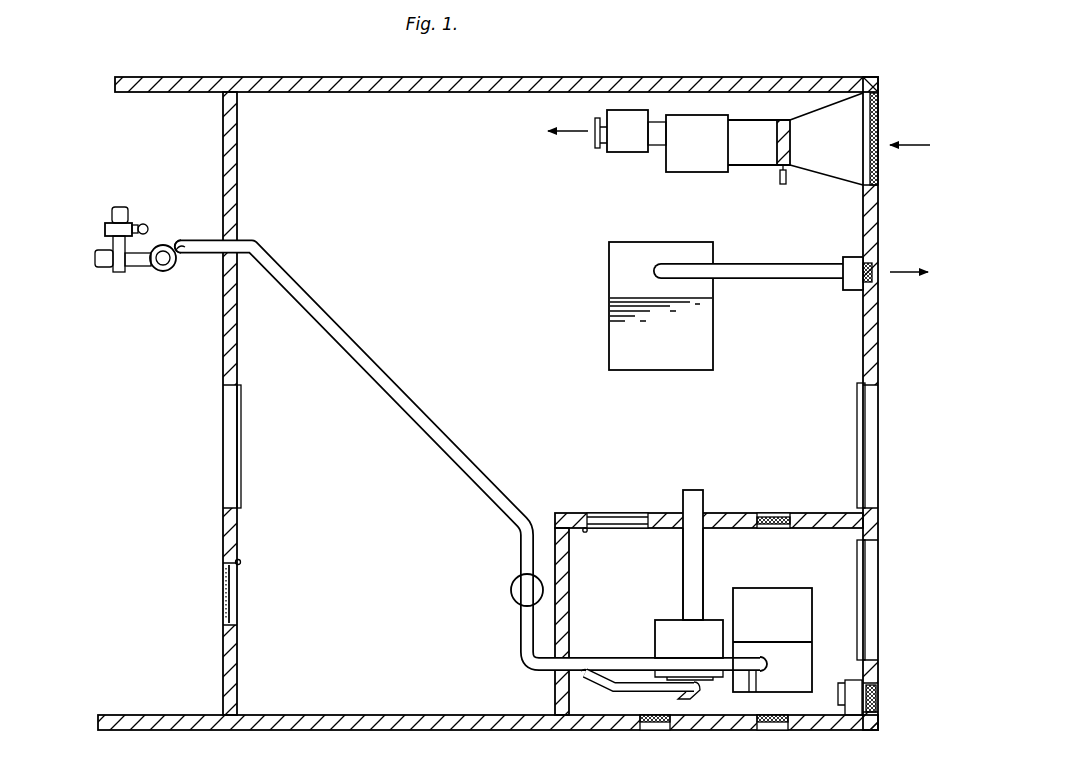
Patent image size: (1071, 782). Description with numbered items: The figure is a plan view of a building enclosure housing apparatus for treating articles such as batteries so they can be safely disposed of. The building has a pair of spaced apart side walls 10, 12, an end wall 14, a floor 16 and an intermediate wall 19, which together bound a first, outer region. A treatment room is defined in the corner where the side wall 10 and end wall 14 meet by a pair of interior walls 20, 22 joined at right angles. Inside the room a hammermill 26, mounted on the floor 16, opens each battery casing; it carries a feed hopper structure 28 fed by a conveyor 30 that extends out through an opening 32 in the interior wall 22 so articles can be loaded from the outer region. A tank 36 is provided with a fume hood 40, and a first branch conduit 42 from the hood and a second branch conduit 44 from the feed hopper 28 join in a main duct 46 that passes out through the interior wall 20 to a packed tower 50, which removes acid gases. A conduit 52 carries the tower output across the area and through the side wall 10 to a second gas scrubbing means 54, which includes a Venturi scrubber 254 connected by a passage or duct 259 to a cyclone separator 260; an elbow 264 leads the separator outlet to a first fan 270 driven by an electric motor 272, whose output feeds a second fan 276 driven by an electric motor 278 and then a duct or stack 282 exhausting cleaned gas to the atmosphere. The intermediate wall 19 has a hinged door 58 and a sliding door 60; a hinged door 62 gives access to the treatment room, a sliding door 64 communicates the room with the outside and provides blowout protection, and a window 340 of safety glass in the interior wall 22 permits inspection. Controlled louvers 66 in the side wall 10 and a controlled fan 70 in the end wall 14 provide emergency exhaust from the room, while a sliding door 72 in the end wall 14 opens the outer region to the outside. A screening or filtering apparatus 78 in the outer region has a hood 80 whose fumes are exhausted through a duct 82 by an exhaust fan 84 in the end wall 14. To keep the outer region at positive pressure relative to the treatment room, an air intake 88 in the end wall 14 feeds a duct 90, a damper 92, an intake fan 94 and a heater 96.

The side wall 10 is at (292, 731).
The side wall 12 is at (605, 77).
The end wall 14 is at (878, 313).
The floor 16 is at (411, 257).
The intermediate wall 19 is at (238, 522).
The interior wall 20 is at (555, 685).
The interior wall 22 is at (838, 513).
The hammermill 26 is at (650, 616).
The feed hopper structure 28 is at (655, 637).
The conveyor 30 is at (683, 544).
The opening 32 is at (683, 504).
The tank 36 is at (778, 586).
The fume hood 40 is at (812, 650).
The first branch conduit 42 is at (752, 690).
The second branch conduit 44 is at (640, 692).
The main duct 46 is at (588, 673).
The packed tower 50 is at (508, 590).
The conduit 52 is at (422, 406).
The gas scrubbing means 54 is at (116, 203).
The hinged door 58 is at (238, 585).
The sliding door 60 is at (242, 421).
The hinged door 62 is at (598, 514).
The sliding door 64 is at (866, 602).
The controlled louvers 66 is at (655, 732).
The controlled fan 70 is at (858, 682).
The sliding door 72 is at (868, 410).
The screening or filtering apparatus 78 is at (606, 320).
The hood 80 is at (609, 262).
The duct 82 is at (783, 264).
The exhaust fan 84 is at (853, 257).
The air intake 88 is at (878, 110).
The duct 90 is at (818, 176).
The damper 92 is at (790, 121).
The intake fan 94 is at (680, 172).
The heater 96 is at (612, 153).
The Venturi scrubber 254 is at (186, 242).
The passage or duct 259 is at (181, 251).
The cyclone separator 260 is at (172, 271).
The connector 264 is at (137, 268).
The first fan 270 is at (118, 274).
The electric motor 272 is at (95, 258).
The second fan 276 is at (105, 230).
The electric motor 278 is at (112, 213).
The duct or stack 282 is at (143, 223).
The window 340 is at (775, 516).